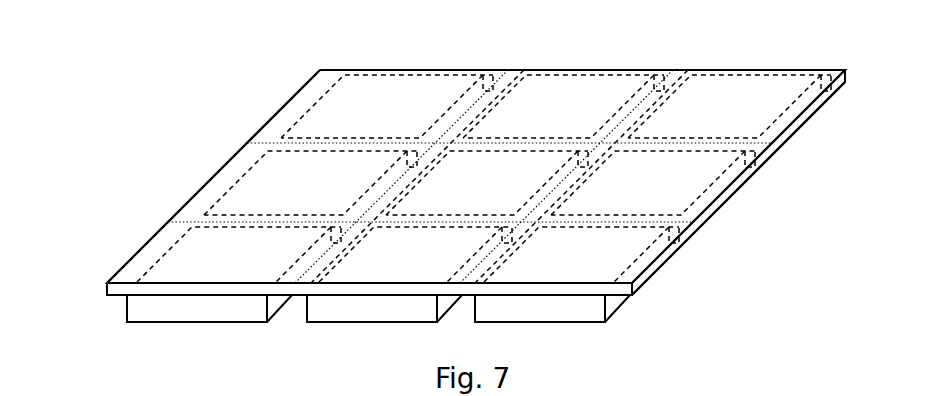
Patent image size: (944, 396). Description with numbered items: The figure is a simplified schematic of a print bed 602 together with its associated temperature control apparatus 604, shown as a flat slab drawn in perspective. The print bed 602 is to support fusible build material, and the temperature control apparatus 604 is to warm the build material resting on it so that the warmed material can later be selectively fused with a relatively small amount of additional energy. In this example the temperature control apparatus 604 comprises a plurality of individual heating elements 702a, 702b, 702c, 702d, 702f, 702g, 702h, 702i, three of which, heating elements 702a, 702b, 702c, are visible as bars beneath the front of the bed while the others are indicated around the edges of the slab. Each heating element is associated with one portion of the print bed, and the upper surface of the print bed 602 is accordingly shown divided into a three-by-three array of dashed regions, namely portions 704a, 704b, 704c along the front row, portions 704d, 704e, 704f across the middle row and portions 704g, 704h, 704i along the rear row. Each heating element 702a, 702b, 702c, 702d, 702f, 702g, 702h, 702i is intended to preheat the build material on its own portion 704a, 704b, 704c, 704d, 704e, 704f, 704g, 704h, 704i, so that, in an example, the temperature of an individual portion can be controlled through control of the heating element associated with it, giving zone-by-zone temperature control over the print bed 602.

The print bed 602 is at (136, 252).
The temperature control apparatus 604 is at (110, 313).
The heating element 702a is at (202, 322).
The heating element 702b is at (367, 322).
The heating element 702c is at (593, 322).
The heating element 702d is at (183, 191).
The heating element 702f is at (738, 207).
The heating element 702g is at (271, 105).
The heating element 702h is at (637, 59).
The heating element 702i is at (807, 138).
The portion of the print bed 704a is at (259, 259).
The portion of the print bed 704b is at (432, 261).
The portion of the print bed 704c is at (599, 262).
The portion of the print bed 704d is at (312, 184).
The portion of the print bed 704e is at (482, 189).
The portion of the print bed 704f is at (650, 184).
The portion of the print bed 704g is at (398, 107).
The portion of the print bed 704h is at (570, 107).
The portion of the print bed 704i is at (735, 107).